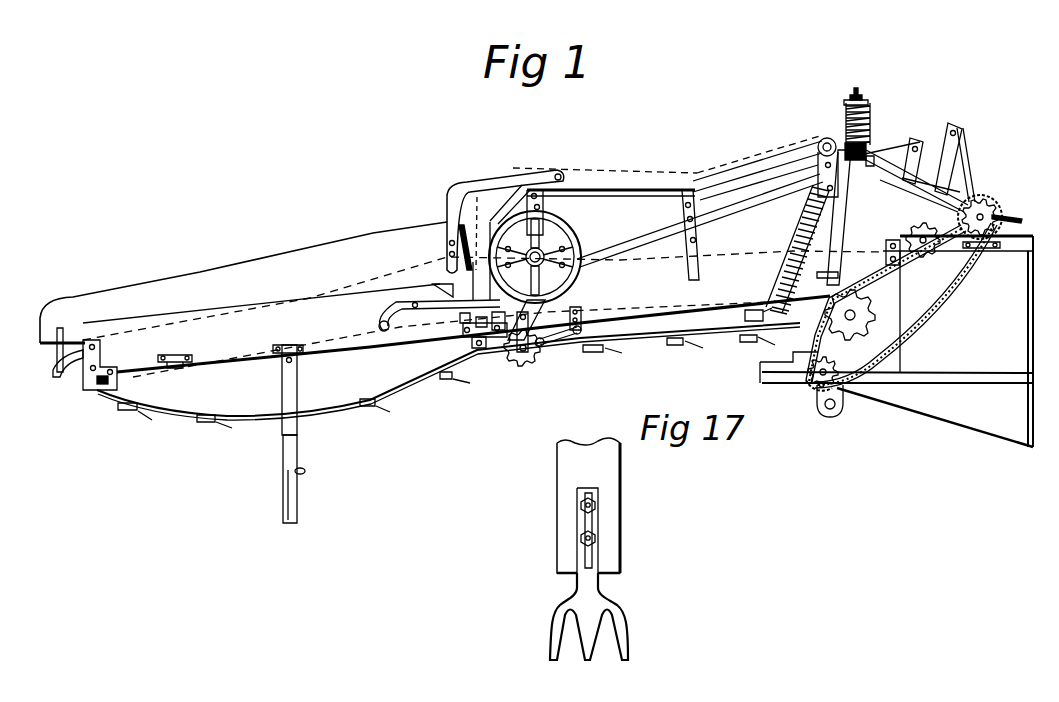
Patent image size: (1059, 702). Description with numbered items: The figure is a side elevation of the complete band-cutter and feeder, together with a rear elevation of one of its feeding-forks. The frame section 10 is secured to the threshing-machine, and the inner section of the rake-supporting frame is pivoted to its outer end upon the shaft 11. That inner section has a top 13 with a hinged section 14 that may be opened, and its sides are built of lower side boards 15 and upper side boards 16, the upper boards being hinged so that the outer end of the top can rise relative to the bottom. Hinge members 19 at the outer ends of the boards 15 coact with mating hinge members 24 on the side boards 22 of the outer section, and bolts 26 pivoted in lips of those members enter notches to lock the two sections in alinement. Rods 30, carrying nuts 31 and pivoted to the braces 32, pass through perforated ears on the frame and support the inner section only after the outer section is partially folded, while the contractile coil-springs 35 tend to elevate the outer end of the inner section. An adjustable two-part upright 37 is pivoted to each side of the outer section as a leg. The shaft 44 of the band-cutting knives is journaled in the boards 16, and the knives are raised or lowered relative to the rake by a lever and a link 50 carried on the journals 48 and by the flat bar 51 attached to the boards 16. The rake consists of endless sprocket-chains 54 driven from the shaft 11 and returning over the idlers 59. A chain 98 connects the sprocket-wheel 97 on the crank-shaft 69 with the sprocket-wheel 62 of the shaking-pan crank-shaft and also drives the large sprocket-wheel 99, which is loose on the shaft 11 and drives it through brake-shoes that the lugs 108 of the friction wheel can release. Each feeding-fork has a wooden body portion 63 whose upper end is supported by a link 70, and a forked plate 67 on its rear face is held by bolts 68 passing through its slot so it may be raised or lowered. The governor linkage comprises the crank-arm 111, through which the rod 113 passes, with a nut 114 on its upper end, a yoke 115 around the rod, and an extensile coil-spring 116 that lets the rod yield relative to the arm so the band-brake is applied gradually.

In FIG. 1, the frame section 10 is at (896, 341).
In FIG. 1, the shaft 11 is at (850, 320).
In FIG. 1, the top 13 is at (605, 201).
In FIG. 1, the hinged section 14 is at (743, 168).
In FIG. 1, the lower side boards 15 is at (680, 300).
In FIG. 1, the upper side boards 16 is at (668, 235).
In FIG. 1, the hinge members 19 is at (500, 350).
In FIG. 1, the side boards 22 is at (216, 345).
In FIG. 1, the hinge members 24 is at (463, 335).
In FIG. 1, the bolts 26 is at (460, 322).
In FIG. 1, the rods 30 is at (733, 215).
In FIG. 1, the nuts 31 is at (872, 156).
In FIG. 1, the braces 32 is at (456, 310).
In FIG. 1, the contractile coil-springs 35 is at (786, 288).
In FIG. 1, the upright 37 is at (297, 390).
In FIG. 1, the shaft of the band-cutter knives 44 is at (547, 257).
In FIG. 1, the journal 48 is at (578, 340).
In FIG. 1, the link 50 is at (568, 340).
In FIG. 1, the flat bar 51 is at (545, 305).
In FIG. 1, the endless sprocket-chains 54 is at (432, 384).
In FIG. 1, the idlers 59 is at (522, 366).
In FIG. 1, the sprocket-wheel 62 is at (822, 382).
In FIG. 1, the body portion 63 is at (958, 150).
In FIG. 17, the body portion 63 is at (608, 472).
In FIG. 17, the plate 67 is at (600, 590).
In FIG. 17, the bolts 68 is at (597, 539).
In FIG. 1, the crank-shaft 69 is at (983, 210).
In FIG. 1, the links 70 is at (966, 170).
In FIG. 1, the sprocket-wheel 97 is at (1000, 218).
In FIG. 1, the chain 98 is at (967, 268).
In FIG. 1, the large sprocket-wheel 99 is at (869, 317).
In FIG. 1, the lugs 108 is at (827, 138).
In FIG. 1, the crank-arm 111 is at (813, 162).
In FIG. 1, the rod 113 is at (852, 212).
In FIG. 1, the nut 114 is at (868, 103).
In FIG. 1, the yoke 115 is at (870, 125).
In FIG. 1, the extensile coil-spring 116 is at (848, 113).